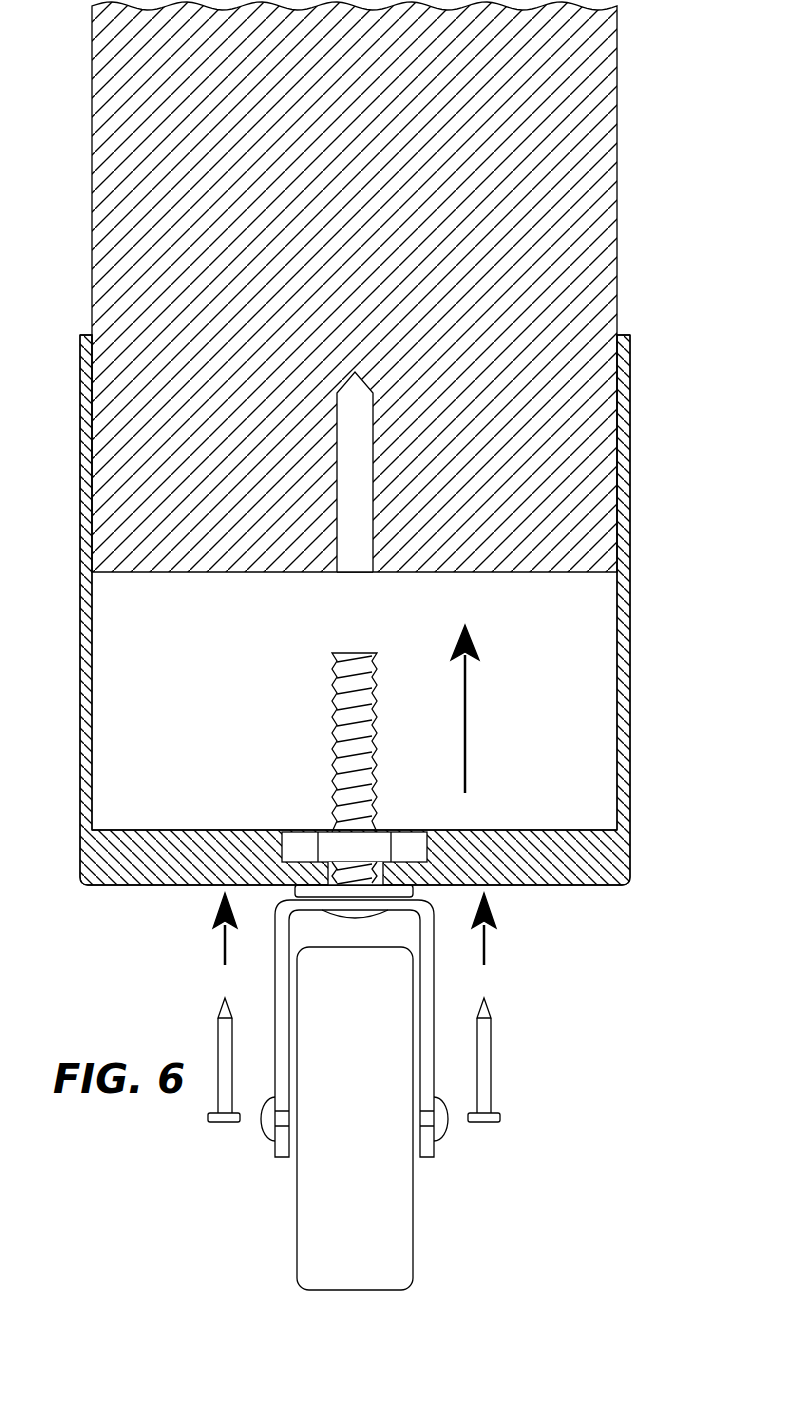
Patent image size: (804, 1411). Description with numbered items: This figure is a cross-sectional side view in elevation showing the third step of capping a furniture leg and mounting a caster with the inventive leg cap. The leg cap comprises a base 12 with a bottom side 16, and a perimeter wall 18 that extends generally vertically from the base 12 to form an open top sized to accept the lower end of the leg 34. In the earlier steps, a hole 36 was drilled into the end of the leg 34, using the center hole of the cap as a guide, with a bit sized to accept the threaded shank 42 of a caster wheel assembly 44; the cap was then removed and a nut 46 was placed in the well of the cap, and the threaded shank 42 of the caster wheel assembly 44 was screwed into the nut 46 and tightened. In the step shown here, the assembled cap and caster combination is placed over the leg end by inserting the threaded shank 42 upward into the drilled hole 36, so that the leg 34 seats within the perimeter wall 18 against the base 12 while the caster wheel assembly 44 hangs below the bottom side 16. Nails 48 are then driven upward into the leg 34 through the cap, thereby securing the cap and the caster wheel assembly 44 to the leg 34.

The base 12 is at (327, 633).
The bottom side 16 is at (598, 885).
The perimeter wall 18 is at (81, 768).
The leg 34 is at (617, 137).
The hole 36 is at (351, 552).
The threaded shank 42 is at (333, 742).
The caster wheel assembly 44 is at (274, 1138).
The nut 46 is at (383, 845).
The nails 48 is at (218, 1052).